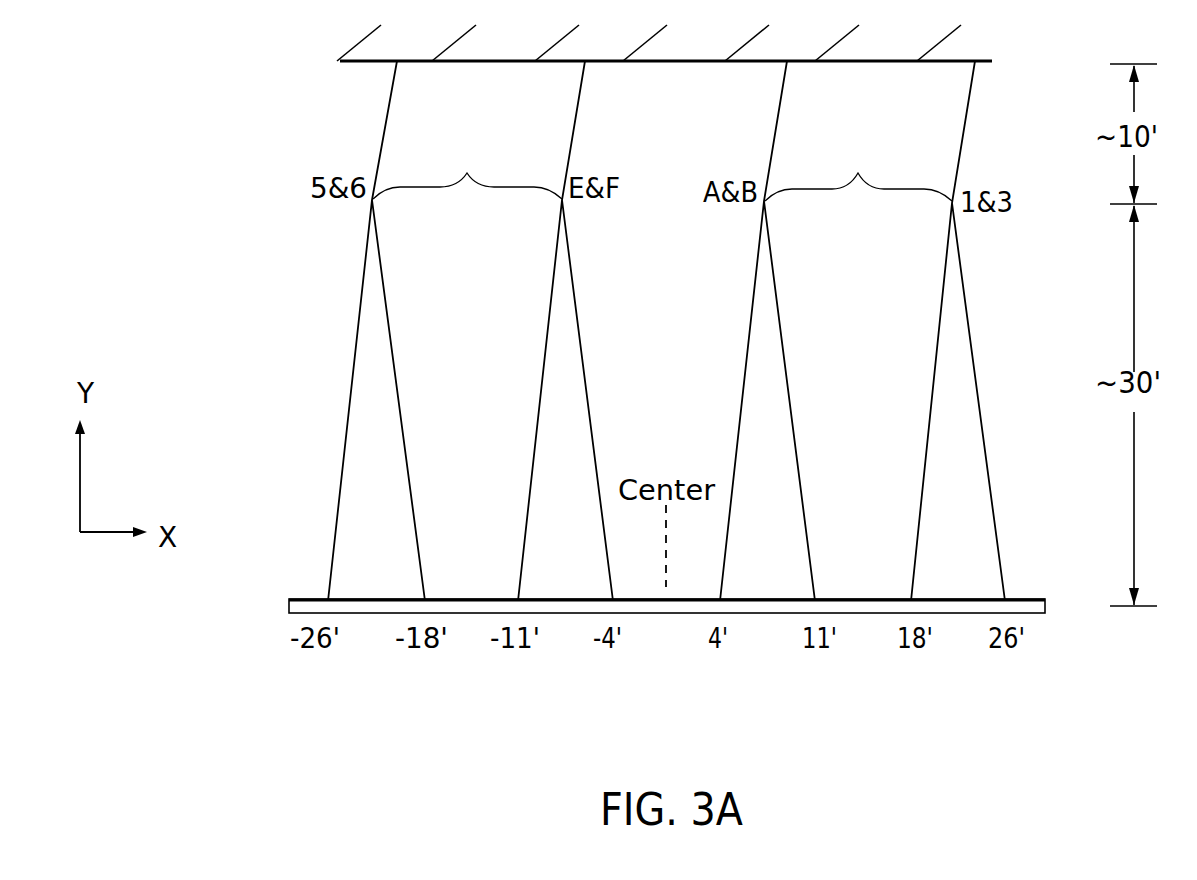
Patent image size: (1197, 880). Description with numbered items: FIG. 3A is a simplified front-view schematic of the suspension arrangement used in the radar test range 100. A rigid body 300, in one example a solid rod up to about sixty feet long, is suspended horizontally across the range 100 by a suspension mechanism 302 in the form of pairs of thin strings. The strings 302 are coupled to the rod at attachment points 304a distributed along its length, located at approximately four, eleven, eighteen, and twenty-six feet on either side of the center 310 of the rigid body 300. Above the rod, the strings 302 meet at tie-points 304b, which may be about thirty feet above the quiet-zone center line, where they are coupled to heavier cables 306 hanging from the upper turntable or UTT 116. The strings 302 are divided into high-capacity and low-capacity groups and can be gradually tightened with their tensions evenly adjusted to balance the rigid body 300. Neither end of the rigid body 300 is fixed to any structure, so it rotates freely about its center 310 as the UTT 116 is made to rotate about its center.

The radar test range 100 is at (277, 412).
The upper turntable (UTT) 116 is at (346, 61).
The rigid body 300 is at (291, 599).
The suspension mechanism (strings) 302 is at (357, 345).
The attachment points 304a is at (517, 600).
The tie-points 304b is at (662, 169).
The cables 306 is at (968, 108).
The center of rigid body 310 is at (680, 615).